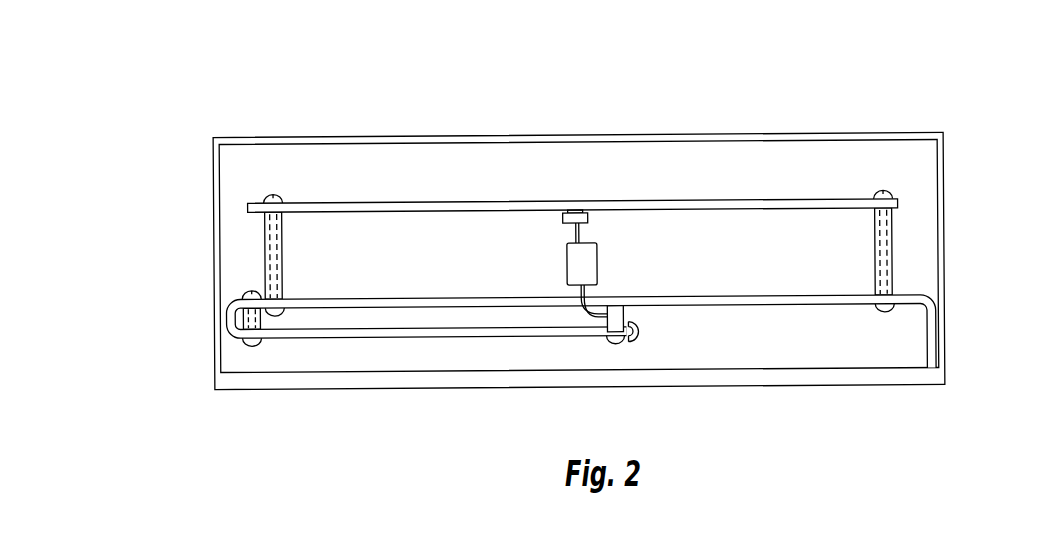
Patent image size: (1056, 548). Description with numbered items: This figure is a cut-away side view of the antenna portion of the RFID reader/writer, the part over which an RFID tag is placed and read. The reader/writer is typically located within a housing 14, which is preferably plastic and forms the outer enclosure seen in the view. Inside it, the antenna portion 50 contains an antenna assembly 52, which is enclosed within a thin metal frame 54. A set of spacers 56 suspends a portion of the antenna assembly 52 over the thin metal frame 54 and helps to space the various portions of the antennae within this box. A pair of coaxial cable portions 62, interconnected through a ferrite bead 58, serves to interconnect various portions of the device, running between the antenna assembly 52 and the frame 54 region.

The housing 14 is at (945, 237).
The antenna portion 50 is at (238, 231).
The antenna assembly 52 is at (315, 205).
The thin metal frame 54 is at (228, 305).
The spacers 56 is at (272, 268).
The ferrite bead 58 is at (597, 262).
The coaxial cable portions 62 is at (588, 230).